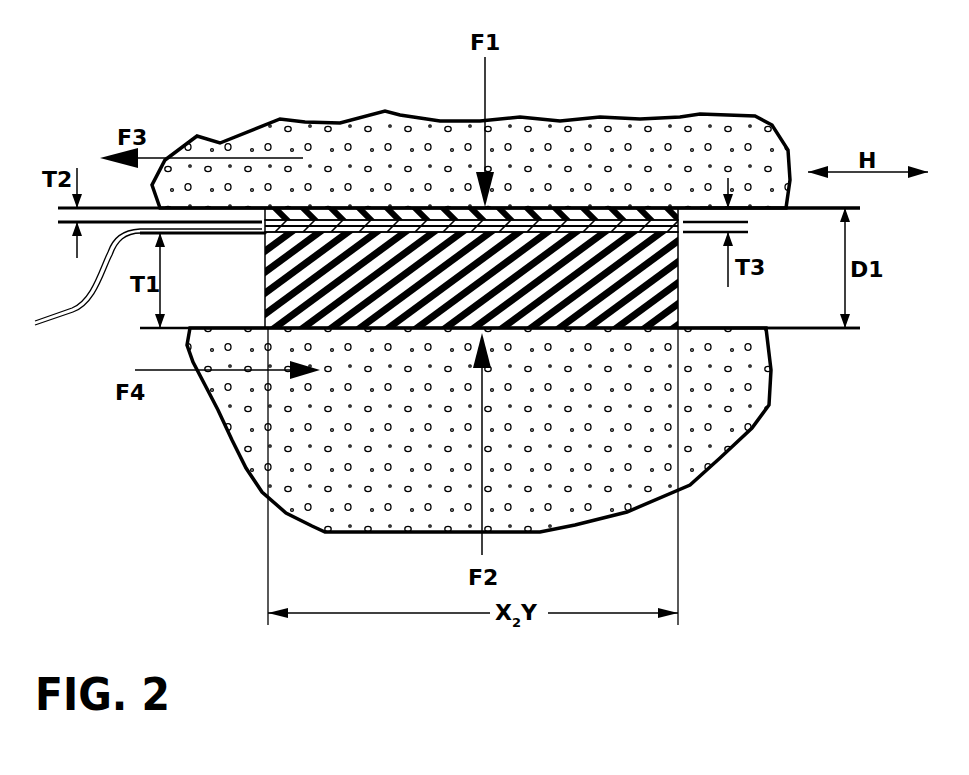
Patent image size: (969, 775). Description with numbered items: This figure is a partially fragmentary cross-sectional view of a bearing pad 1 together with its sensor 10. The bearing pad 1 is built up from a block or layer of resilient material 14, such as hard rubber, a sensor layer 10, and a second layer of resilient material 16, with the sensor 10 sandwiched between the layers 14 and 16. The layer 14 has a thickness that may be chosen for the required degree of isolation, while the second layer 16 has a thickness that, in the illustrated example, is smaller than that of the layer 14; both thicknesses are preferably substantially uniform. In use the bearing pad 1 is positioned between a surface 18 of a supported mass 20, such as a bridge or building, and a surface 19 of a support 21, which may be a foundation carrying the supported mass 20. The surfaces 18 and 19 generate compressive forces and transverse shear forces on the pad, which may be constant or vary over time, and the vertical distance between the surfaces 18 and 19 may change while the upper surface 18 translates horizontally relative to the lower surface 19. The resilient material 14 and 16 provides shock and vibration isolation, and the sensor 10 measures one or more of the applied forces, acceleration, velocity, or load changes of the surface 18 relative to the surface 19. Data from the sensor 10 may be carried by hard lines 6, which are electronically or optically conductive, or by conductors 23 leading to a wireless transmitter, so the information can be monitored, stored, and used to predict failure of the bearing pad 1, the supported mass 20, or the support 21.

The bearing pad 1 is at (469, 260).
The sensor 10 is at (265, 238).
The layer of resilient material 14 is at (647, 270).
The second layer of resilient material 16 is at (653, 213).
The surface of supported mass 18 is at (763, 210).
The surface of support 19 is at (738, 328).
The supported mass 20 is at (623, 132).
The support 21 is at (615, 478).
The lines 6 is at (141, 309).
The conductors 23 is at (72, 313).